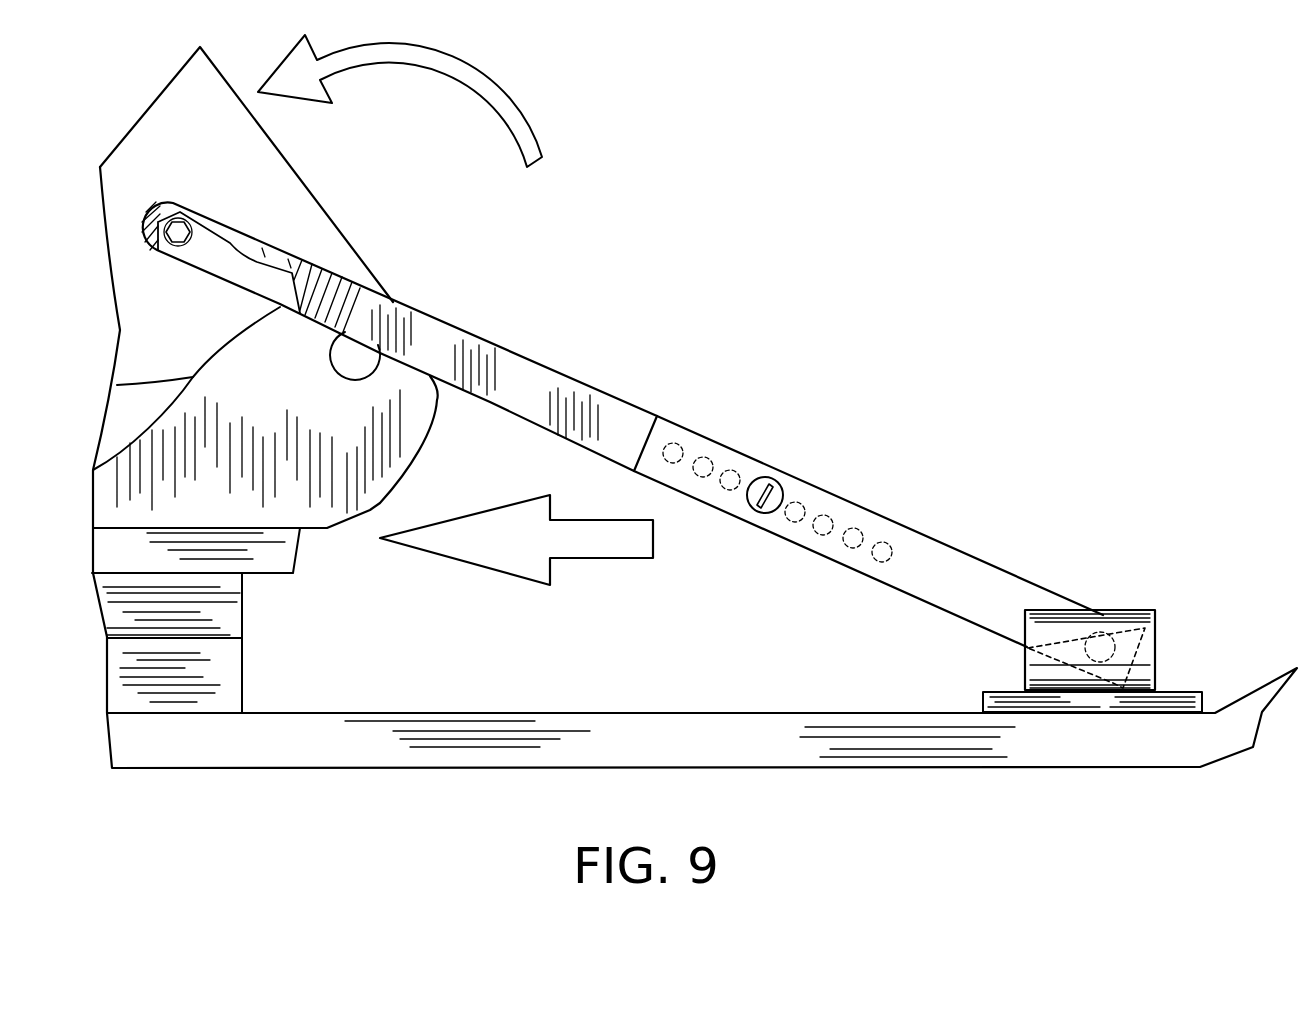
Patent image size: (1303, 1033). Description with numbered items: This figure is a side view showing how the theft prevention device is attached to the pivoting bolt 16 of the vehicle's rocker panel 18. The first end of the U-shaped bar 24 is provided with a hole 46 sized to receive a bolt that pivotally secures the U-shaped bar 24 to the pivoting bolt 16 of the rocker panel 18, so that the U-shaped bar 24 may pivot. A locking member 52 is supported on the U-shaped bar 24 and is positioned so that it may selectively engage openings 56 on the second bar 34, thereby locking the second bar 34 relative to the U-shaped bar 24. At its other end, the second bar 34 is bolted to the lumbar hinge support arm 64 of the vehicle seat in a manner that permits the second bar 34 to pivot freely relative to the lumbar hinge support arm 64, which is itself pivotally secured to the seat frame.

The pivoting bolt 16 is at (1133, 610).
The rocker panel 18 is at (1040, 743).
The U-shaped bar 24 is at (945, 540).
The second bar 34 is at (553, 377).
The hole 46 is at (1105, 617).
The locking member 52 is at (763, 480).
The openings 56 is at (673, 463).
The lumbar hinge support arm 64 is at (290, 153).